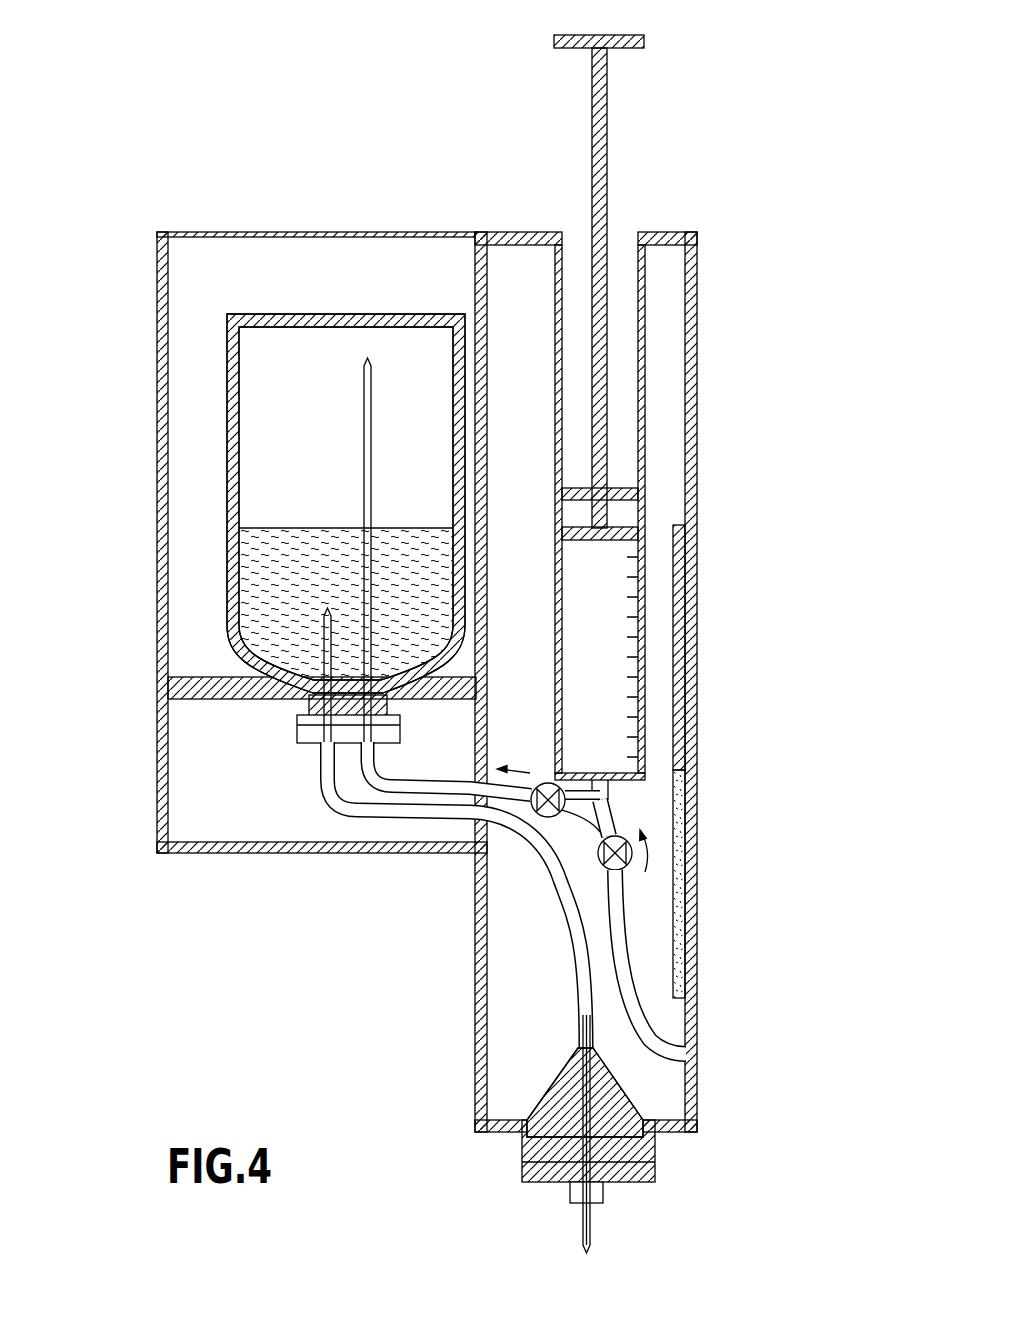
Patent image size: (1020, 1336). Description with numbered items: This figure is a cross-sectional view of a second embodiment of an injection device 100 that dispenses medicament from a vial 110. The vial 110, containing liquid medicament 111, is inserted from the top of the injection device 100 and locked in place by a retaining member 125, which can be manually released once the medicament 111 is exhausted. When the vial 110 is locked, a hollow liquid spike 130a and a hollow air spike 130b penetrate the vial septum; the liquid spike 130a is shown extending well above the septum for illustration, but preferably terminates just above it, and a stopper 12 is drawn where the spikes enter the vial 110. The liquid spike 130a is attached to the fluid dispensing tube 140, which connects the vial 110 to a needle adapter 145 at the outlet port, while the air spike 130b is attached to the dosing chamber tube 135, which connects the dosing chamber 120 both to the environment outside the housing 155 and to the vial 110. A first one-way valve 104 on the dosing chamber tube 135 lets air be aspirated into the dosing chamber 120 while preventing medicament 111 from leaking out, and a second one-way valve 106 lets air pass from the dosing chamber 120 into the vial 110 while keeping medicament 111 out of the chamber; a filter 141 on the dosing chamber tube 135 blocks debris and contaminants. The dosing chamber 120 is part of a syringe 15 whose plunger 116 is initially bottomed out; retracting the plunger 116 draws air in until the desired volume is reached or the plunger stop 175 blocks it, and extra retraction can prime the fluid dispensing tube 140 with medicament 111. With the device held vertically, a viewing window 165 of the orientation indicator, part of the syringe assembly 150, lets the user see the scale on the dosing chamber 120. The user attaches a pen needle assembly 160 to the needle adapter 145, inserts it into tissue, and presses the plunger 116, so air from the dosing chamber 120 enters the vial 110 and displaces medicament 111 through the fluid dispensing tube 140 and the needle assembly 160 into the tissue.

The injection device 100 is at (140, 192).
The vial 110 is at (258, 314).
The liquid medicament 111 is at (297, 562).
The hollow liquid spike 130a is at (322, 622).
The hollow air spike 130b is at (372, 388).
The retaining member 125 is at (158, 677).
The stopper 12 is at (305, 717).
The dosing chamber tube 135 is at (428, 787).
The plunger 116 is at (636, 44).
The housing 155 is at (697, 255).
The syringe barrel 15 is at (648, 362).
The plunger stop 175 is at (632, 487).
The viewing window 165 is at (694, 566).
The dosing chamber 120 is at (630, 652).
The syringe assembly 150 is at (730, 785).
The second one-way valve 106 is at (540, 812).
The fluid dispensing tube 140 is at (600, 870).
The first one-way valve 104 is at (575, 897).
The filter 141 is at (697, 1052).
The needle adapter 145 is at (628, 1146).
The pen needle assembly 160 is at (531, 1183).